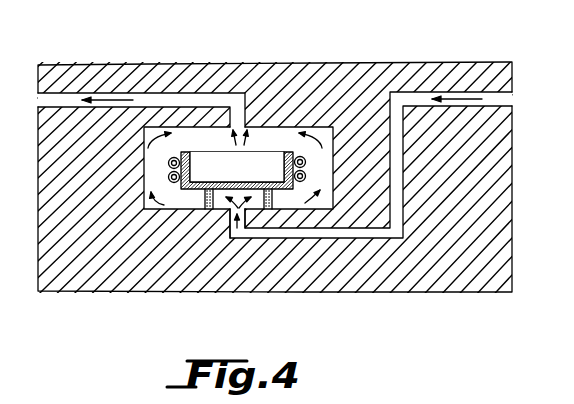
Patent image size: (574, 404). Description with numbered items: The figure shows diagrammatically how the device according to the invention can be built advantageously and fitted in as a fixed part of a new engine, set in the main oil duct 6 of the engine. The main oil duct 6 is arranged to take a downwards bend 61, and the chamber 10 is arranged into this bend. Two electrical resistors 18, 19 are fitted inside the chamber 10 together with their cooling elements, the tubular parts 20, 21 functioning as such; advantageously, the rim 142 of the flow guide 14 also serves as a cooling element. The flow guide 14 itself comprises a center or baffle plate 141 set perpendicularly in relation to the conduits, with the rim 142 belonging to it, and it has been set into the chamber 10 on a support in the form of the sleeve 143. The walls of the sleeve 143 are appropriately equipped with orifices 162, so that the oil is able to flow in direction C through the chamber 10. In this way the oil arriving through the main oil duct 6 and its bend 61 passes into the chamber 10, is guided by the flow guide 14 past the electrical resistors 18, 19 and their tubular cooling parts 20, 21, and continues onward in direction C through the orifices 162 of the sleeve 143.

The main oil duct 6 is at (496, 100).
The downwards bend 61 is at (397, 197).
The chamber 10 is at (217, 148).
The flow guide 14 is at (254, 168).
The baffle plate 141 is at (218, 210).
The rim 142 is at (183, 173).
The sleeve 143 is at (237, 212).
The orifices 162 is at (208, 207).
The electrical resistor 18 is at (304, 160).
The electrical resistor 19 is at (305, 175).
The tubular part 20 is at (168, 162).
The tubular part 21 is at (167, 177).
The direction of oil flow C is at (111, 102).